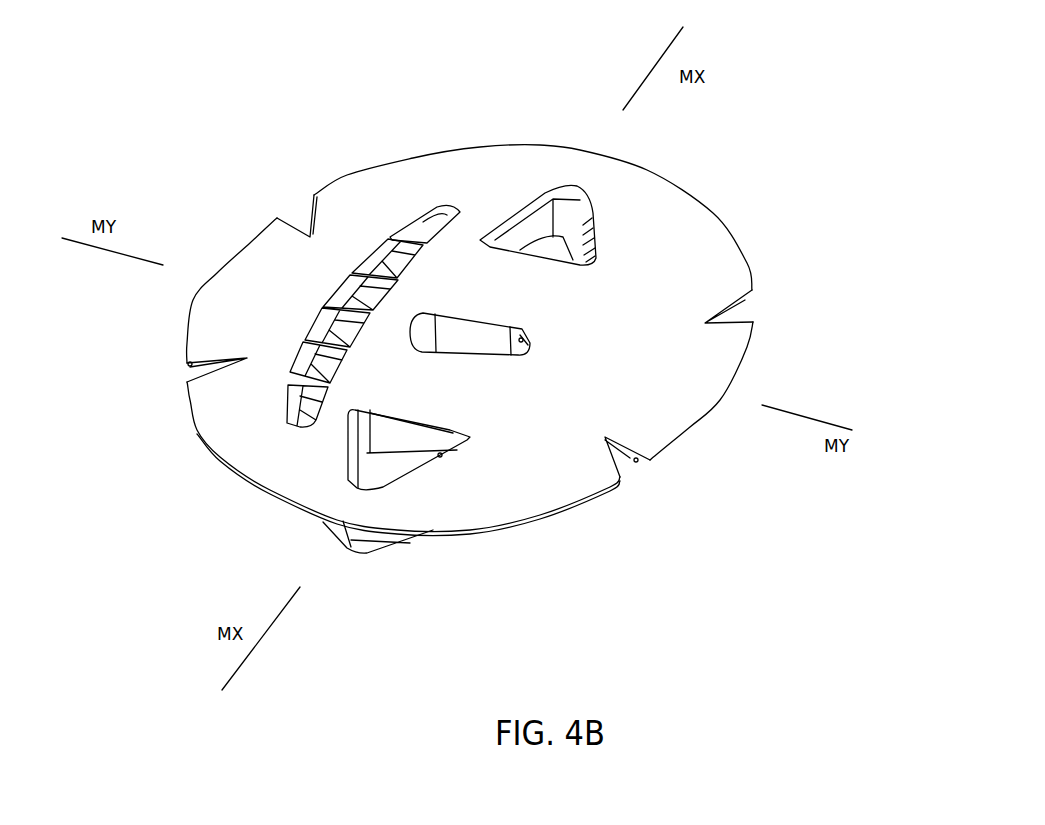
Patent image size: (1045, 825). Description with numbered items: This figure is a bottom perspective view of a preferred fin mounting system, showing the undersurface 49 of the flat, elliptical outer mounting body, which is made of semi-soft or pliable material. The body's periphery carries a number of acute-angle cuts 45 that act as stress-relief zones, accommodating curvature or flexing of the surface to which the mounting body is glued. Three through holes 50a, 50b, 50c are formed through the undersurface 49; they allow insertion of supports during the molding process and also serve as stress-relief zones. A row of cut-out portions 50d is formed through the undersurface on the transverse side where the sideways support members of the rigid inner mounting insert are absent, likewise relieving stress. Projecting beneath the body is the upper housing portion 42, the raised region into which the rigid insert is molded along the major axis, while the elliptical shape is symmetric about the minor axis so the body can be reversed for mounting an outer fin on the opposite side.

The upper housing portion 42 is at (337, 532).
The acute-angle cuts 45 is at (193, 366).
The undersurface 49 is at (695, 272).
The through hole 50a is at (520, 207).
The through hole 50b is at (530, 345).
The through hole 50c is at (440, 455).
The cut-out portions 50d is at (420, 218).